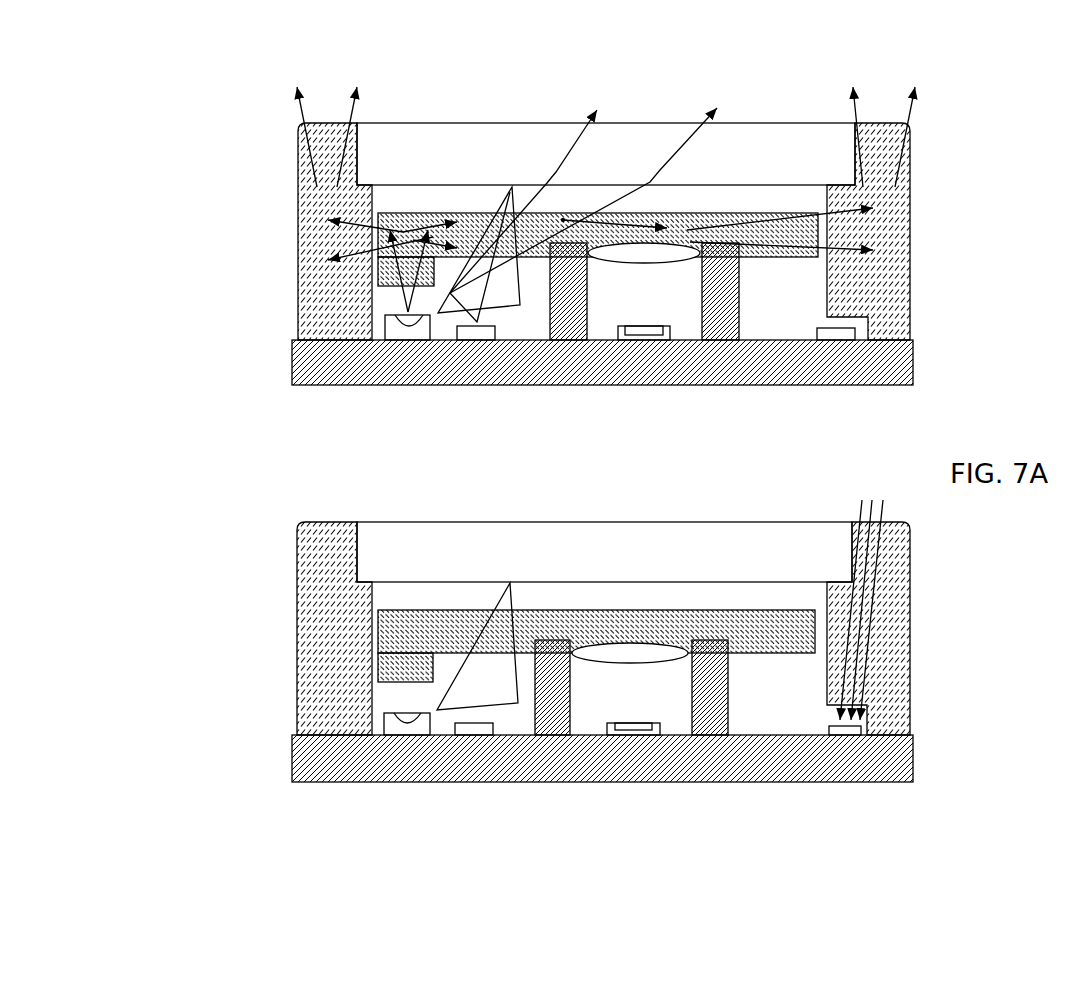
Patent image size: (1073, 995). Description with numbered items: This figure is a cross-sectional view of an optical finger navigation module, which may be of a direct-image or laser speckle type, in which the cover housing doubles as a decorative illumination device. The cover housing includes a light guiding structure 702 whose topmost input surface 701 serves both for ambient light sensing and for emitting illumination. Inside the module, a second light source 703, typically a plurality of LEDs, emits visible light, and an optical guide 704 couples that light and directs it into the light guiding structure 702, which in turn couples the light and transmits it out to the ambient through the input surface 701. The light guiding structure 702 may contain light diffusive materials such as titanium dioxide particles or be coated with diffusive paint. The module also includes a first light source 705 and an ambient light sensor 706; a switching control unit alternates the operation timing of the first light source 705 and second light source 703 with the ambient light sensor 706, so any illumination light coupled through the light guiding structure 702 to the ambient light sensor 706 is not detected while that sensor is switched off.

The input surface 701 is at (297, 125).
The light guiding structure 702 is at (302, 195).
The second light source 703 is at (397, 332).
The optical guide 704 is at (478, 227).
The first light source 705 is at (470, 335).
The ambient light sensor 706 is at (853, 733).